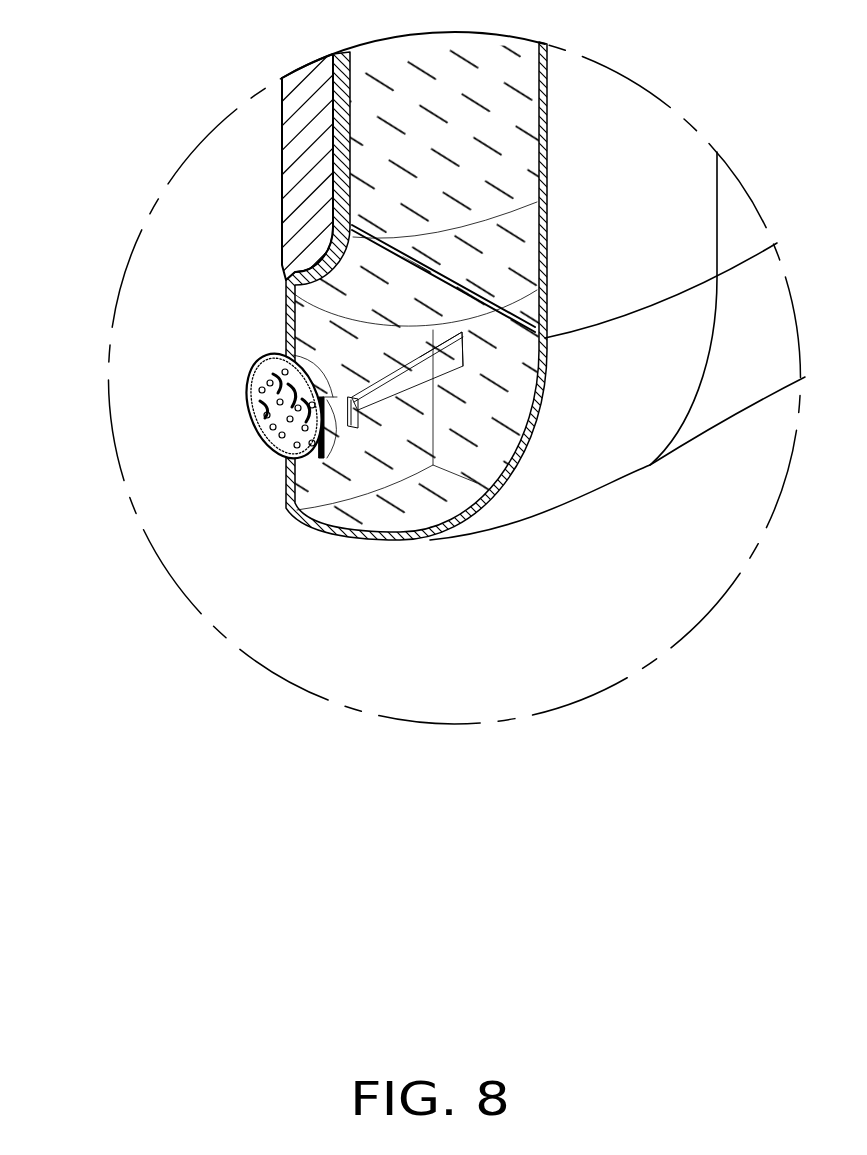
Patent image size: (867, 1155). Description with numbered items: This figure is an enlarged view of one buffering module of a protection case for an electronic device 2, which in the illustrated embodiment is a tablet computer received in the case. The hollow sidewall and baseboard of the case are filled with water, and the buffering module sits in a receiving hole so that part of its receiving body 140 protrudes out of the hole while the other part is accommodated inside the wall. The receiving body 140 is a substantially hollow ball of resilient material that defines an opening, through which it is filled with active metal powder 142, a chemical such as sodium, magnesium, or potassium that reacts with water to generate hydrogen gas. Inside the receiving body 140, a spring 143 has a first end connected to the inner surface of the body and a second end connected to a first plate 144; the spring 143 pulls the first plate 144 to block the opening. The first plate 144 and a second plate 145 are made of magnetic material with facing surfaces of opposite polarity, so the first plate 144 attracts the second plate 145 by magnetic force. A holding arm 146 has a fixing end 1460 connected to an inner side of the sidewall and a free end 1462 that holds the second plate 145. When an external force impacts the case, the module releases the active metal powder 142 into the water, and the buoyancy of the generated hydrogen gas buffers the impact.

The electronic device 2 is at (312, 130).
The receiving body 140 is at (262, 368).
The active metal powder 142 is at (252, 382).
The spring 143 is at (262, 408).
The first plate 144 is at (333, 443).
The second plate 145 is at (333, 443).
The holding arm 146 is at (420, 370).
The fixing end 1460 is at (457, 352).
The free end 1462 is at (363, 412).